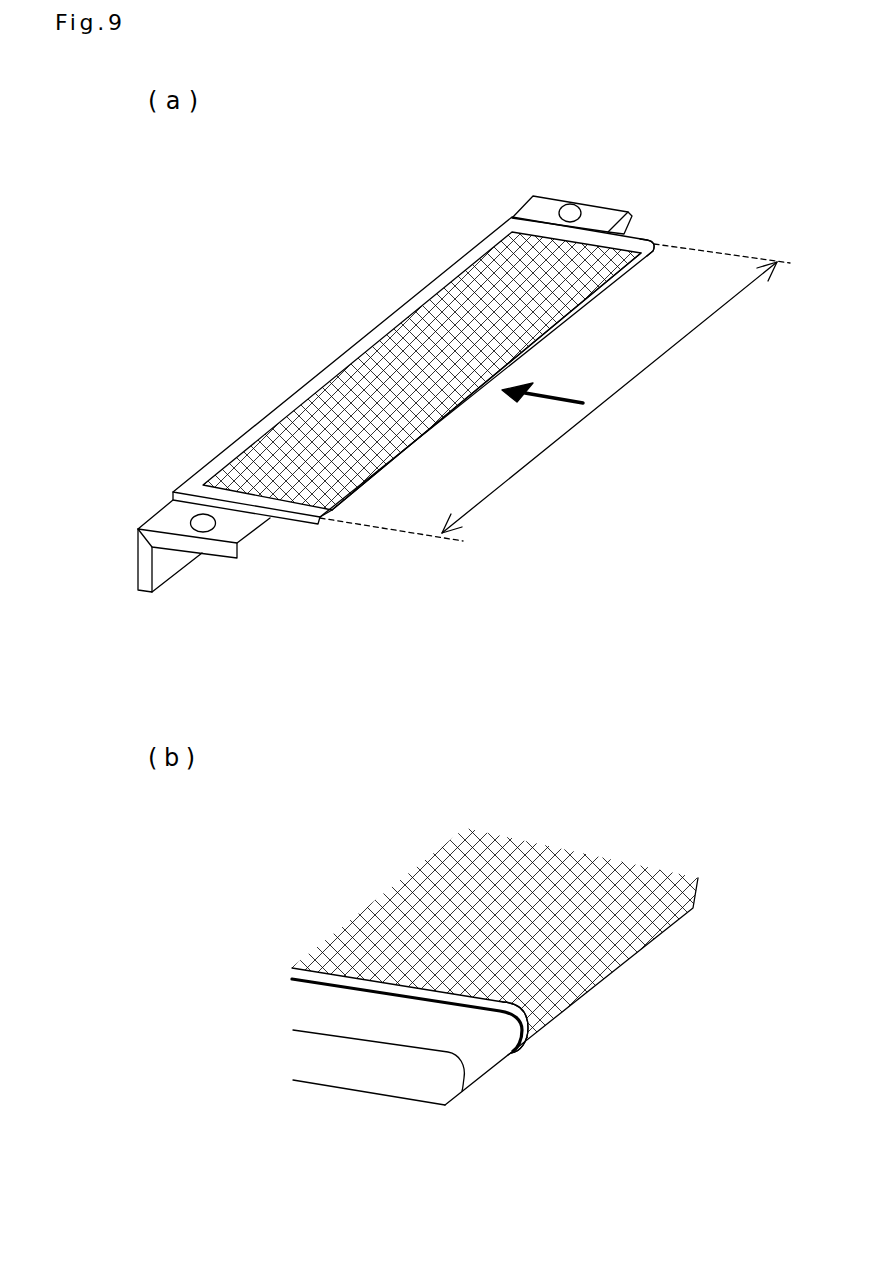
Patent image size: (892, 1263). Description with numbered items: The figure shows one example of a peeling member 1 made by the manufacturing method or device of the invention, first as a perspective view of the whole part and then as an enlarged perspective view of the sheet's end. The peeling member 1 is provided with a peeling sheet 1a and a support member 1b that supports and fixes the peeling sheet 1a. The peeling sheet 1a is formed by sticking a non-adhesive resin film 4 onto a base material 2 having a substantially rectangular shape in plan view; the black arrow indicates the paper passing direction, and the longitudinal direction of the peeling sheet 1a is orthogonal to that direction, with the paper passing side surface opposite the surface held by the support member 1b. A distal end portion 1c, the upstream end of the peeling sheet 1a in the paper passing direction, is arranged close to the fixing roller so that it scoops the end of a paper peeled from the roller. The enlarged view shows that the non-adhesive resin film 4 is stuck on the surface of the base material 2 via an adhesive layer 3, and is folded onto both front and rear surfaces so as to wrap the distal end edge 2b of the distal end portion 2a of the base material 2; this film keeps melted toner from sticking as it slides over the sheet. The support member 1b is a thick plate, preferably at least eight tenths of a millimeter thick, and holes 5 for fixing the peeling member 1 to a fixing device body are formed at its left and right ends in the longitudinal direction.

The peeling member 1 is at (389, 152).
The peeling sheet 1a is at (457, 237).
The support member 1b is at (533, 213).
The distal end portion 1c is at (445, 422).
The base material 2 is at (357, 342).
The distal end portion 2a is at (395, 1072).
The distal end edge 2b is at (655, 248).
The adhesive layer 3 is at (450, 1008).
The non-adhesive resin film 4 is at (277, 445).
The holes 5 is at (573, 209).